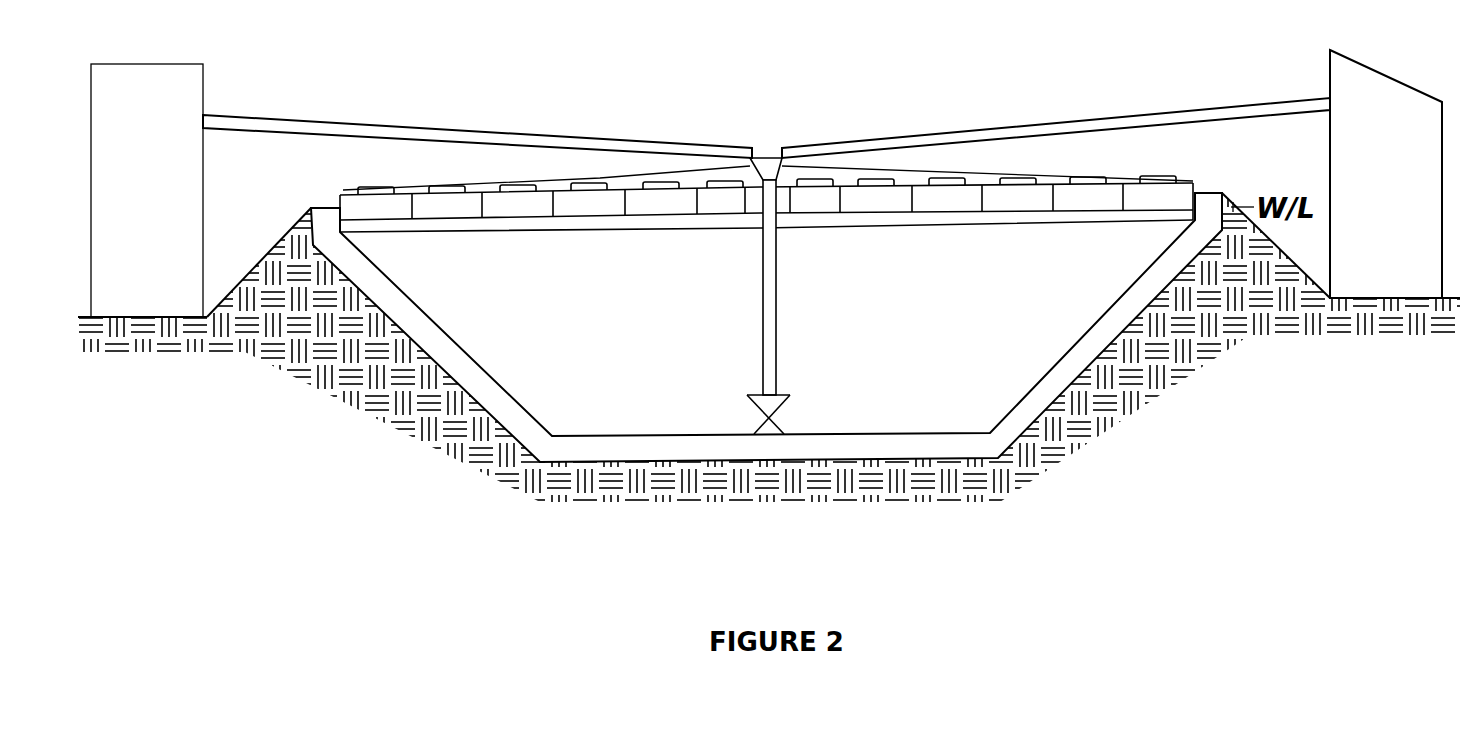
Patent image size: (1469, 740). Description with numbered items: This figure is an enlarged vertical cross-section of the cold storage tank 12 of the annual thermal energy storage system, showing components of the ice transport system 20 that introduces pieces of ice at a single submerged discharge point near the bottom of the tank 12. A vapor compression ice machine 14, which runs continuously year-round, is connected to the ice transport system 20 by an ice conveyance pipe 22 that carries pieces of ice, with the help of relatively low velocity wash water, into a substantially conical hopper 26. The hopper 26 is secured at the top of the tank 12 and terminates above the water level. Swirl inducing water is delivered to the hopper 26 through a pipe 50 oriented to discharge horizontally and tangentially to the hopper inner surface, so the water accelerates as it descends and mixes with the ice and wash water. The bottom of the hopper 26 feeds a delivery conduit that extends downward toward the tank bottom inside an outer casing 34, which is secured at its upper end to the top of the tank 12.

The cold storage tank 12 is at (440, 380).
The vapor compression ice machine 14 is at (1393, 97).
The ice transport system 20 is at (773, 132).
The ice conveyance pipe 22 is at (1079, 116).
The conical hopper 26 is at (765, 160).
The outer casing 34 is at (763, 343).
The swirl water pipe 50 is at (465, 127).